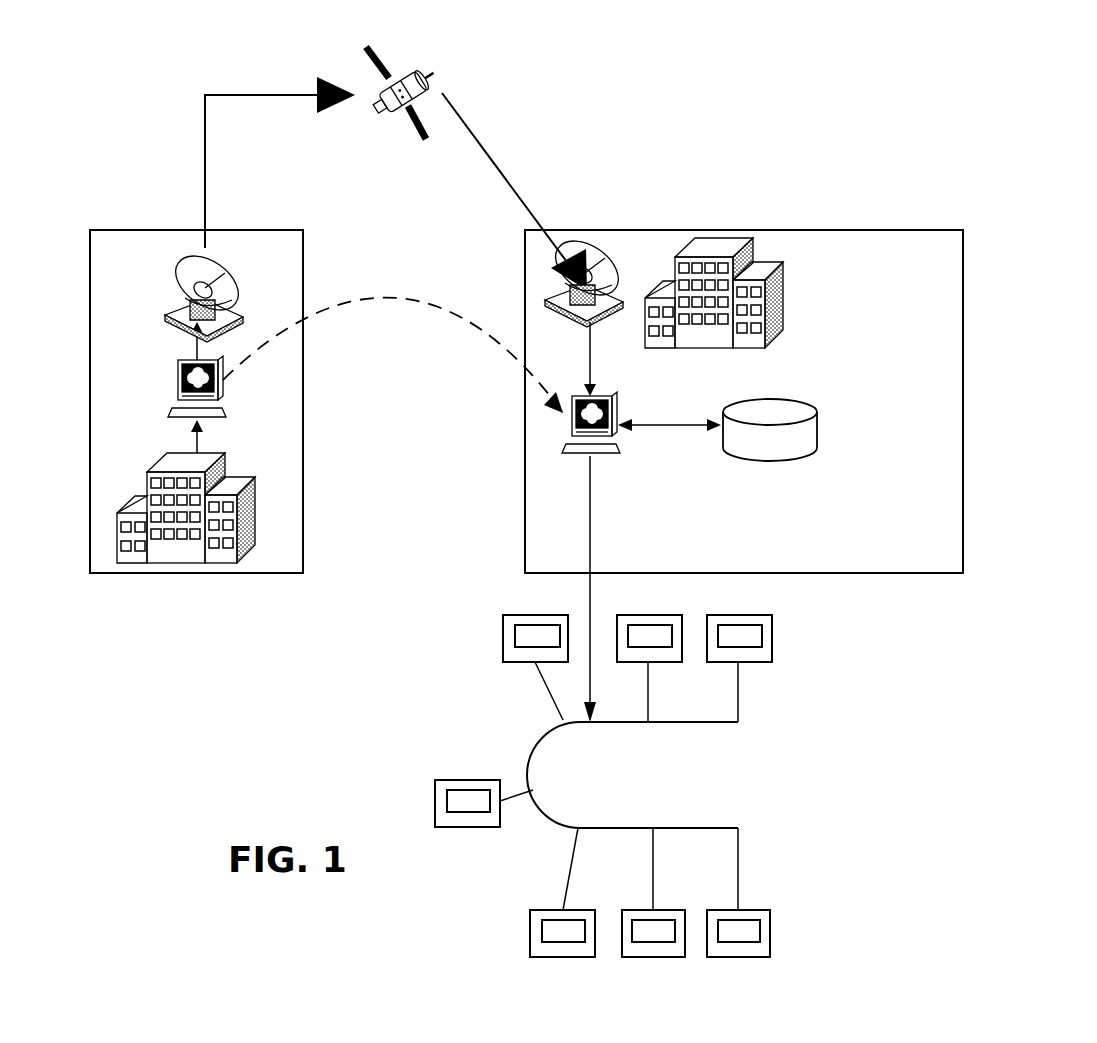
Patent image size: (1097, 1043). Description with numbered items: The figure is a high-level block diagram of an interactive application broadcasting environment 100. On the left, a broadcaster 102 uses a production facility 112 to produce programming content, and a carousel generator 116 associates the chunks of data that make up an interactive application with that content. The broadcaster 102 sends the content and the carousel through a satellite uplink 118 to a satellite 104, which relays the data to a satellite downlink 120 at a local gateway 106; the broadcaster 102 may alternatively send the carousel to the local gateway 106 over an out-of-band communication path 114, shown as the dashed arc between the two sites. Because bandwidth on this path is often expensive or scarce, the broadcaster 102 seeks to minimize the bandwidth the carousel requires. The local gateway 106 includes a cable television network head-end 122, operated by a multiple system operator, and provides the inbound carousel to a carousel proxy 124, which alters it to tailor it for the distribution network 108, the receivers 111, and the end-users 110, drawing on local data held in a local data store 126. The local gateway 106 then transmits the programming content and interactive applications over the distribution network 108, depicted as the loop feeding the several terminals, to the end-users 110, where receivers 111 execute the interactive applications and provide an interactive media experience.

The interactive application broadcasting environment 100 is at (661, 36).
The broadcaster 102 is at (303, 520).
The satellite 104 is at (410, 50).
The local gateway 106 is at (903, 573).
The distribution network 108 is at (535, 753).
The end-users 110 is at (767, 939).
The receivers 111 is at (760, 932).
The production facility 112 is at (118, 537).
The out-of-band communication path 114 is at (400, 300).
The carousel generator 116 is at (163, 378).
The satellite uplink 118 is at (163, 293).
The satellite downlink 120 is at (598, 250).
The cable television network head-end 122 is at (768, 343).
The carousel proxy 124 is at (615, 440).
The local data store 126 is at (785, 452).